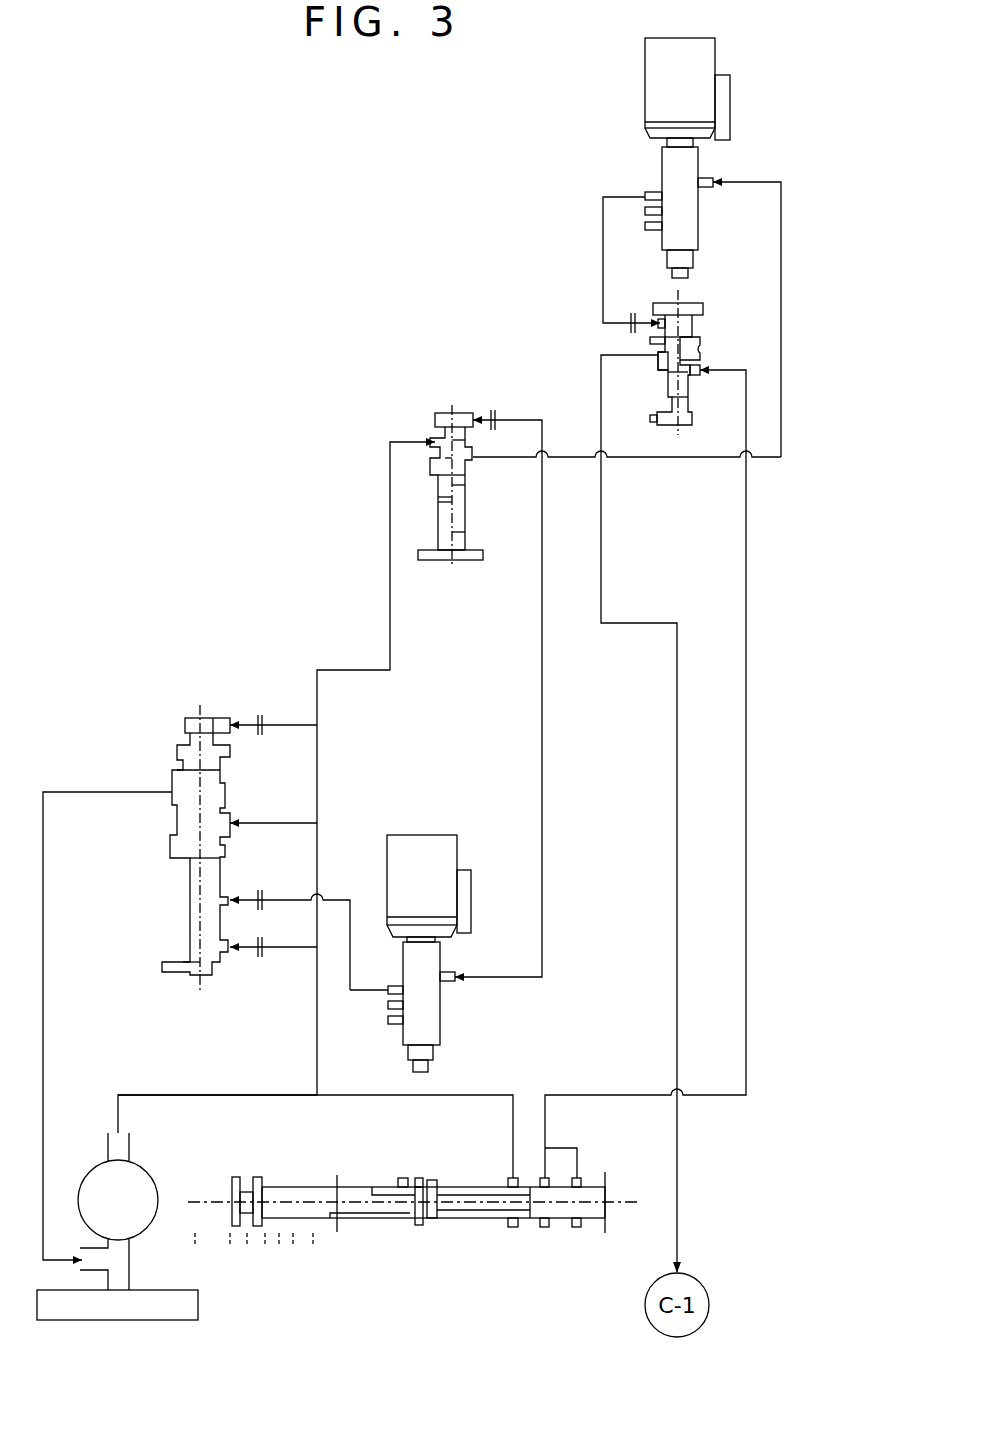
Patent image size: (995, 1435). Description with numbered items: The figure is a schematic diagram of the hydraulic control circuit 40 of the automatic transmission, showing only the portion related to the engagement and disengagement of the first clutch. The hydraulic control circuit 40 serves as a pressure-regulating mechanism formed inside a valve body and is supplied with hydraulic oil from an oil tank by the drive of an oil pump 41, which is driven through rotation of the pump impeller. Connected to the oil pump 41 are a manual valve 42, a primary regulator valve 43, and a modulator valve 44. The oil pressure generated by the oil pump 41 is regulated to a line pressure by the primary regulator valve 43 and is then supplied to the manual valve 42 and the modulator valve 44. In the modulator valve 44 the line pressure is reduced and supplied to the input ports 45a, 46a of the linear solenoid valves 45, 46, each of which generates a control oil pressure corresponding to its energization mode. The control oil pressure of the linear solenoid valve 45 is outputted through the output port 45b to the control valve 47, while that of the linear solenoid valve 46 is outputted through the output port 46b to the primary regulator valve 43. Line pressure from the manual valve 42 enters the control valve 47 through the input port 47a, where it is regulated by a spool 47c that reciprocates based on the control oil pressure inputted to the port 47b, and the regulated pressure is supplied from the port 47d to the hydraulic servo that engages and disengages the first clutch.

The hydraulic control circuit 40 is at (195, 283).
The oil pump 41 is at (92, 1174).
The manual valve 42 is at (468, 1187).
The primary regulator valve 43 is at (186, 714).
The modulator valve 44 is at (440, 413).
The linear solenoid valve 45 is at (645, 62).
The input port 45a is at (704, 176).
The output port 45b is at (648, 193).
The linear solenoid valve 46 is at (444, 834).
The input port 46a is at (448, 968).
The output port 46b is at (390, 998).
The control valve 47 is at (694, 298).
The input port 47a is at (700, 364).
The port 47b is at (660, 318).
The spool 47c is at (690, 380).
The port 47d is at (660, 364).